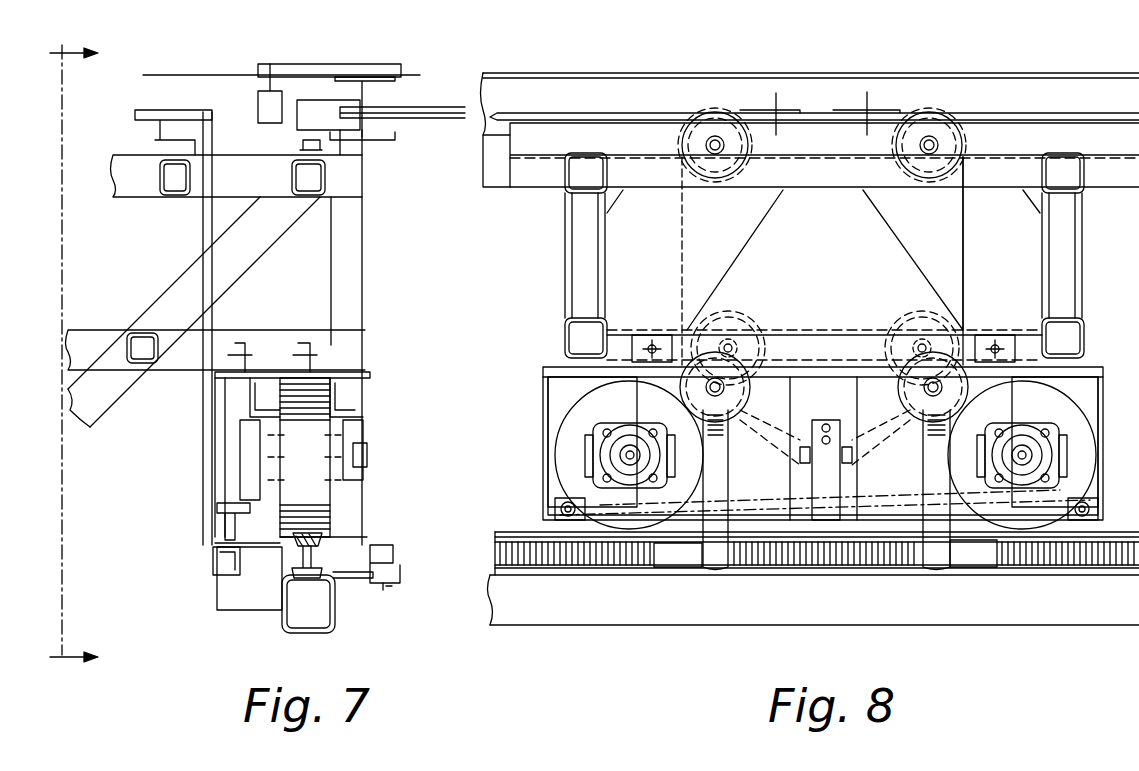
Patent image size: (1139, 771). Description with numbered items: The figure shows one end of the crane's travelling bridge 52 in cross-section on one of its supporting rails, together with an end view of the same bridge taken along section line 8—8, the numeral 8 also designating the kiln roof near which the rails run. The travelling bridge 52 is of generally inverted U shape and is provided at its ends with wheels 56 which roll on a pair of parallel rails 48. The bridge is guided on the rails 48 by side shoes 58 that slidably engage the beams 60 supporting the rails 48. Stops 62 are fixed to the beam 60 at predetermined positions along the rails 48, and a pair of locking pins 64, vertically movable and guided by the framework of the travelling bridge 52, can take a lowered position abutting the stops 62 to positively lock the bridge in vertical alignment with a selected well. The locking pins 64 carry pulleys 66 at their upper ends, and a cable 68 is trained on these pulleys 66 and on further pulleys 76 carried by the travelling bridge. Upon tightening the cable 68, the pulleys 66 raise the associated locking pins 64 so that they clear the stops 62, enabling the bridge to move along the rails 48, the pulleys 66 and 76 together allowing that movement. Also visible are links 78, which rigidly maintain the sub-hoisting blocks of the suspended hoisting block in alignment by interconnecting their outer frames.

In FIG. 7, the roof 8 is at (403, 70).
In FIG. 7, the rails 48 is at (310, 556).
In FIG. 8, the rails 48 is at (507, 553).
In FIG. 7, the travelling bridge 52 is at (367, 272).
In FIG. 8, the travelling bridge 52 is at (1085, 283).
In FIG. 7, the wheels 56 is at (318, 405).
In FIG. 8, the wheels 56 is at (560, 458).
In FIG. 7, the side shoes 58 is at (230, 593).
In FIG. 7, the beams 60 is at (285, 625).
In FIG. 8, the beams 60 is at (565, 618).
In FIG. 7, the stops 62 is at (395, 553).
In FIG. 8, the stops 62 is at (680, 563).
In FIG. 8, the locking pins 64 is at (713, 570).
In FIG. 8, the pulleys 66 is at (740, 330).
In FIG. 8, the cable 68 is at (588, 113).
In FIG. 8, the pulleys 76 is at (768, 115).
In FIG. 8, the links 78 is at (965, 250).